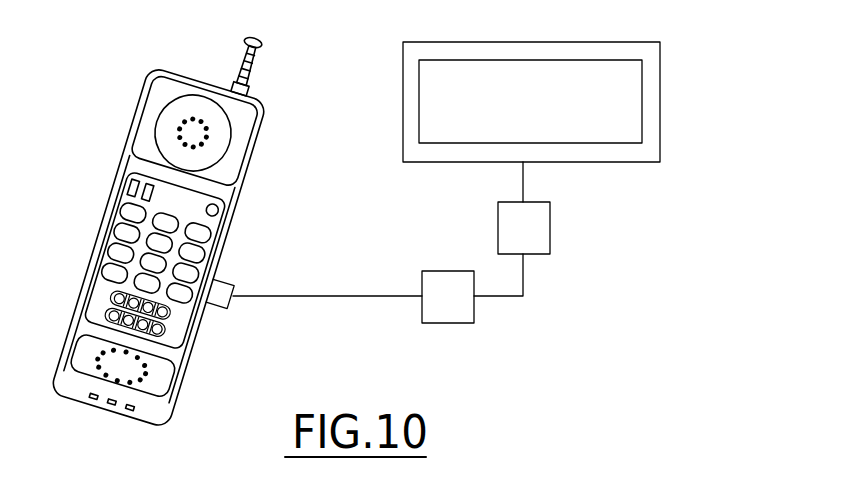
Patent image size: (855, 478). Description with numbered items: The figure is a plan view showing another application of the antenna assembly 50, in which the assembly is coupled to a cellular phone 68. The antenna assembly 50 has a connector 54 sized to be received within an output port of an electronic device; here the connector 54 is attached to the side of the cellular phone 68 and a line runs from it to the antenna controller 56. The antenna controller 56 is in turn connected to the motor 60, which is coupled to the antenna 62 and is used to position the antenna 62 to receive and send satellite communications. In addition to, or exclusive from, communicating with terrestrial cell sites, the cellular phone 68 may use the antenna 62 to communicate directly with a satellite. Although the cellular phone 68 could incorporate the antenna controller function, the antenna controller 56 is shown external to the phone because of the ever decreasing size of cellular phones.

The antenna assembly 50 is at (334, 80).
The connector 54 is at (220, 311).
The antenna controller 56 is at (460, 323).
The motor 60 is at (550, 220).
The antenna 62 is at (660, 92).
The cellular phone 68 is at (113, 181).